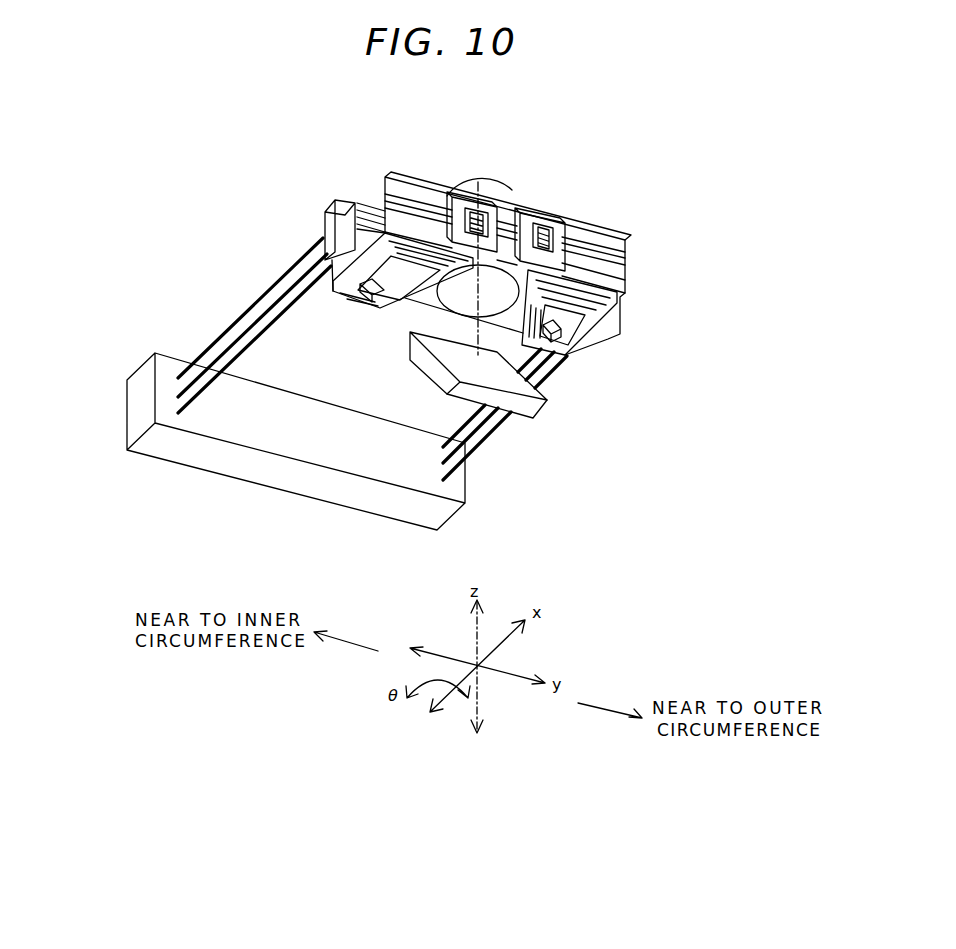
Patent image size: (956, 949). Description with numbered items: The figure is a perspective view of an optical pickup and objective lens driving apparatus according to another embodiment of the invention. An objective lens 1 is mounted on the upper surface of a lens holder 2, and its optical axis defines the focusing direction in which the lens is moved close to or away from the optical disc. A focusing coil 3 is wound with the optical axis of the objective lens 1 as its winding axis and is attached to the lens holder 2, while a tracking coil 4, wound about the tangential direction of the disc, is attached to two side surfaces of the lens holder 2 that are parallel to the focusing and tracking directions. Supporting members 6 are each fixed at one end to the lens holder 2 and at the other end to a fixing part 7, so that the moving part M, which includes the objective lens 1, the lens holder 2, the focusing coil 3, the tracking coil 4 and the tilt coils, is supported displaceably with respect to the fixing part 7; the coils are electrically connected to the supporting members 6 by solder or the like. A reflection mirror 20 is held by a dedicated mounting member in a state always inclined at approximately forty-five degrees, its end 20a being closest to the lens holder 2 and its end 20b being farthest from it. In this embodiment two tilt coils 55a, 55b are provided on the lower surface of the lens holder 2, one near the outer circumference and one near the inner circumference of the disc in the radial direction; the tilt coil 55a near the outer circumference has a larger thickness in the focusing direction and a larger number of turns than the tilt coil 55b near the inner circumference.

The objective lens 1 is at (490, 212).
The lens holder 2 is at (608, 243).
The focusing coil 3 is at (622, 268).
The tracking coil 4 is at (550, 222).
The moving part M is at (627, 286).
The supporting member 6 is at (254, 357).
The fixing part 7 is at (217, 463).
The reflection mirror 20 is at (417, 353).
The end of reflection mirror 20a is at (438, 333).
The end of reflection mirror 20b is at (537, 418).
The tilt coil 55a is at (582, 338).
The tilt coil 55b is at (368, 258).